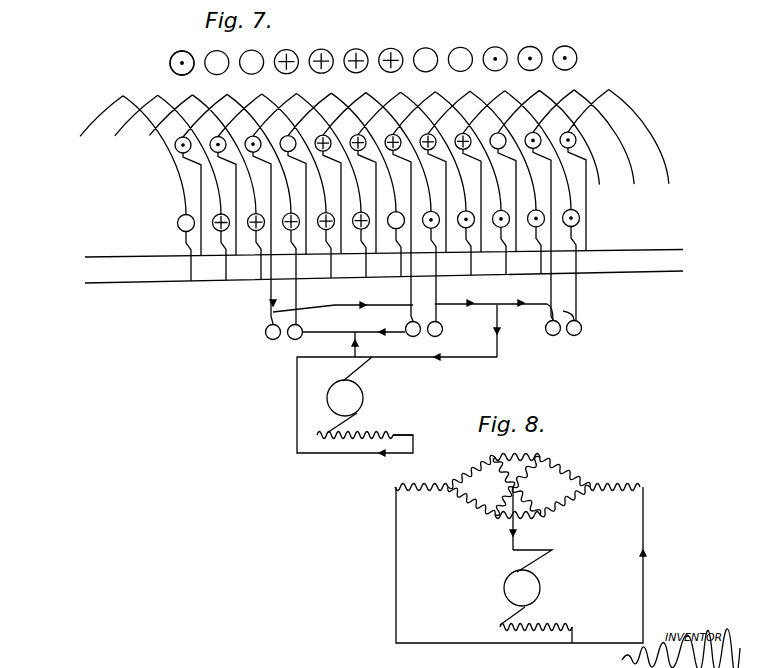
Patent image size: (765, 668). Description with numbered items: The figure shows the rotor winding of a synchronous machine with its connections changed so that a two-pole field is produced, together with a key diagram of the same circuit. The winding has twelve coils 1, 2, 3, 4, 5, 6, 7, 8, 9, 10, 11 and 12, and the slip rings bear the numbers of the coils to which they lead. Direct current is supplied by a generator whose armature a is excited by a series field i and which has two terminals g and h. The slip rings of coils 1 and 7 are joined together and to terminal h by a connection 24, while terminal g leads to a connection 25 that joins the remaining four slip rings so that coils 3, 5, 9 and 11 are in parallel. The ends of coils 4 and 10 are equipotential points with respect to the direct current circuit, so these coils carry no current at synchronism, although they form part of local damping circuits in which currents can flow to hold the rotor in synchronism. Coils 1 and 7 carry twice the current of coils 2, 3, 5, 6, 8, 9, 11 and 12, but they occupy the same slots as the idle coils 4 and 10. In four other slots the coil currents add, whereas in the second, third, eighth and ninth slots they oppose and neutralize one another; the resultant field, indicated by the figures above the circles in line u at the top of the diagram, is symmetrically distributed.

In FIG. 7, the coil 1 is at (239, 231).
In FIG. 8, the coil 1 is at (421, 480).
In FIG. 7, the coil 2 is at (373, 131).
In FIG. 8, the coil 2 is at (471, 471).
In FIG. 7, the coil 3 is at (307, 230).
In FIG. 8, the coil 3 is at (498, 472).
In FIG. 7, the coil 4 is at (342, 175).
In FIG. 8, the coil 4 is at (517, 450).
In FIG. 7, the coil 5 is at (379, 228).
In FIG. 8, the coil 5 is at (527, 471).
In FIG. 7, the coil 6 is at (412, 174).
In FIG. 8, the coil 6 is at (565, 470).
In FIG. 7, the coil 7 is at (447, 228).
In FIG. 8, the coil 7 is at (615, 480).
In FIG. 7, the coil 8 is at (482, 173).
In FIG. 8, the coil 8 is at (565, 502).
In FIG. 7, the coil 9 is at (518, 227).
In FIG. 8, the coil 9 is at (528, 501).
In FIG. 7, the coil 10 is at (342, 175).
In FIG. 8, the coil 10 is at (516, 525).
In FIG. 7, the coil 11 is at (387, 226).
In FIG. 8, the coil 11 is at (495, 501).
In FIG. 7, the coil 12 is at (412, 174).
In FIG. 8, the coil 12 is at (471, 503).
In FIG. 7, the connection 24 is at (354, 335).
In FIG. 8, the connection 24 is at (425, 636).
In FIG. 7, the connection 25 is at (422, 321).
In FIG. 8, the connection 25 is at (512, 509).
In FIG. 7, the line of resultant currents u is at (168, 63).
In FIG. 7, the generator terminal g is at (397, 405).
In FIG. 8, the generator terminal g is at (531, 587).
In FIG. 7, the armature a is at (327, 398).
In FIG. 8, the armature a is at (504, 588).
In FIG. 7, the series field i is at (355, 426).
In FIG. 8, the series field i is at (536, 618).
In FIG. 7, the generator terminal h is at (403, 425).
In FIG. 8, the generator terminal h is at (578, 632).